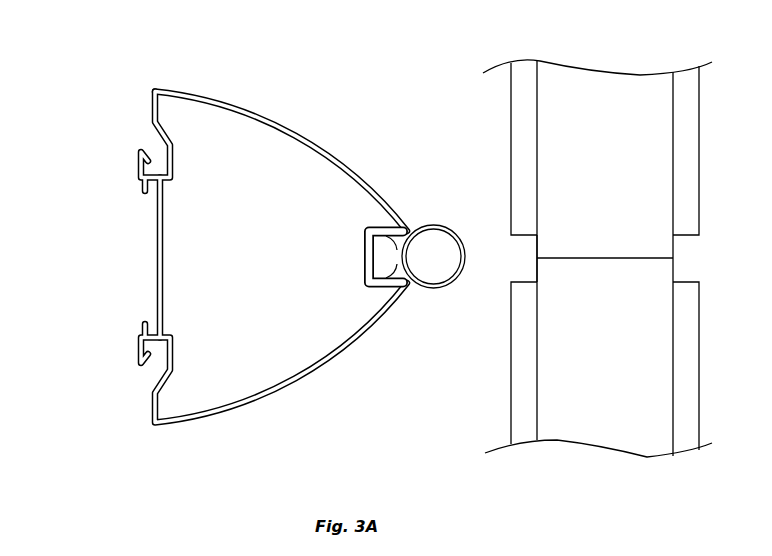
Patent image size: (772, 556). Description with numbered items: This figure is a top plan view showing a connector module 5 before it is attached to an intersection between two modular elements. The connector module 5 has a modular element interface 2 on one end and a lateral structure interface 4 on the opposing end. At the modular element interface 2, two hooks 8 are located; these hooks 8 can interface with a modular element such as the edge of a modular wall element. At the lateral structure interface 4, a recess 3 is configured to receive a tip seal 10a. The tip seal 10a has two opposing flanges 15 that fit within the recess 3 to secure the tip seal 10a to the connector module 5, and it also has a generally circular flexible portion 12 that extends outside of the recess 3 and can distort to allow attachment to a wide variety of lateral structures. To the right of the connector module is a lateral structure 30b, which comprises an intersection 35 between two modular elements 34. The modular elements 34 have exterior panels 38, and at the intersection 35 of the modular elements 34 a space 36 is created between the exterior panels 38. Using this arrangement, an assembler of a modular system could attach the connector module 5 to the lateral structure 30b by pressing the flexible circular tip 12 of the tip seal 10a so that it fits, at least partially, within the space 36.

The modular element interface 2 is at (80, 225).
The recess 3 is at (364, 256).
The lateral structure interface 4 is at (405, 130).
The connector module 5 is at (244, 82).
The hooks 8 is at (119, 161).
The tip seal 10a is at (460, 200).
The flexible circular portion 12 is at (433, 226).
The flanges 15 is at (393, 230).
The lateral structure 30b is at (643, 48).
The modular elements 34 is at (587, 68).
The intersection 35 is at (630, 259).
The space 36 is at (523, 262).
The exterior panels 38 is at (528, 68).